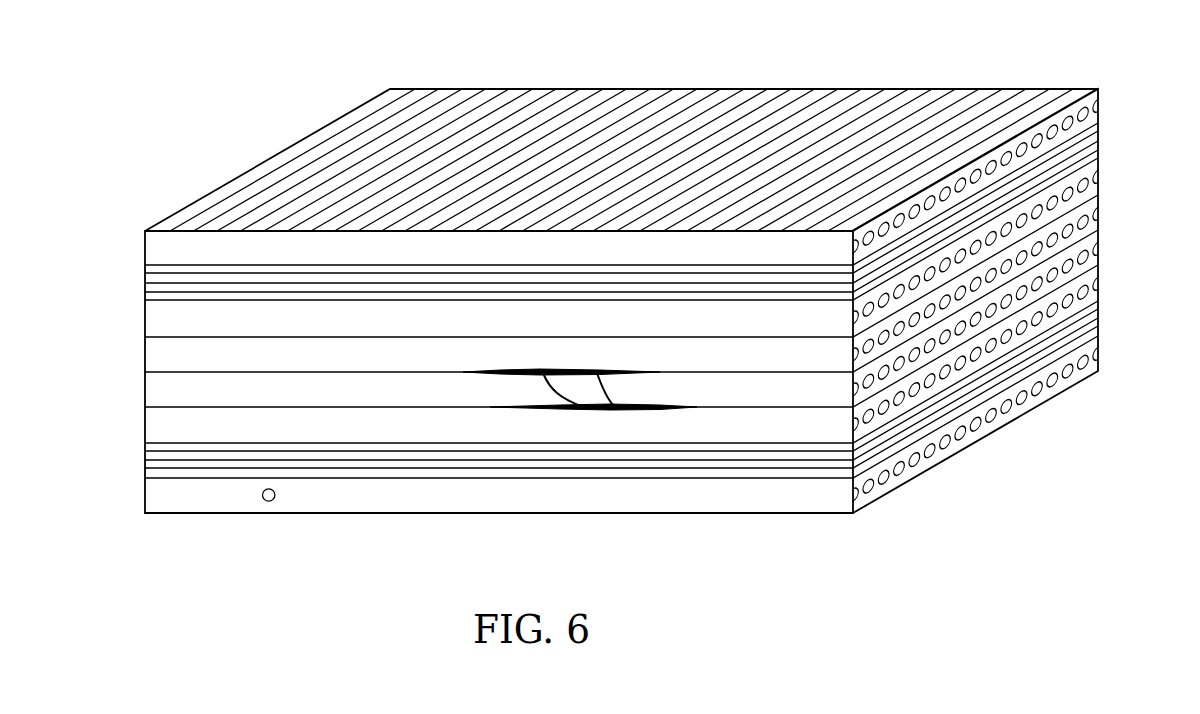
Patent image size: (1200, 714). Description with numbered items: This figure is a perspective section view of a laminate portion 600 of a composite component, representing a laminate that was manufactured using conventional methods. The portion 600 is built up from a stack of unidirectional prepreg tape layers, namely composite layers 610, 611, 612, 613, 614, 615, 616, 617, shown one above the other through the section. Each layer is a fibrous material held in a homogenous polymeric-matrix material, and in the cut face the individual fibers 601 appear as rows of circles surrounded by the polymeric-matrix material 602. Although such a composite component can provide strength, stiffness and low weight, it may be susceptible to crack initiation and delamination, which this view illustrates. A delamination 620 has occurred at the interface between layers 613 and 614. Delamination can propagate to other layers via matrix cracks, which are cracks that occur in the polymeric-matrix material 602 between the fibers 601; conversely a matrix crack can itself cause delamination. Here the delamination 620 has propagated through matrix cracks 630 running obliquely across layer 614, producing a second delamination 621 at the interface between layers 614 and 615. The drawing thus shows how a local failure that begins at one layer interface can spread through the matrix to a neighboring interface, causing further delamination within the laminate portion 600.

The portion 600 is at (260, 78).
The fibers 601 is at (273, 499).
The polymeric-matrix material 602 is at (373, 507).
The composite layer 610 is at (1098, 108).
The composite layer 611 is at (1098, 143).
The composite layer 612 is at (1098, 178).
The composite layer 613 is at (1098, 213).
The composite layer 614 is at (1098, 248).
The composite layer 615 is at (1098, 283).
The composite layer 616 is at (1098, 318).
The composite layer 617 is at (1098, 356).
The delamination 620 is at (517, 375).
The delamination 621 is at (627, 411).
The matrix cracks 630 is at (592, 409).